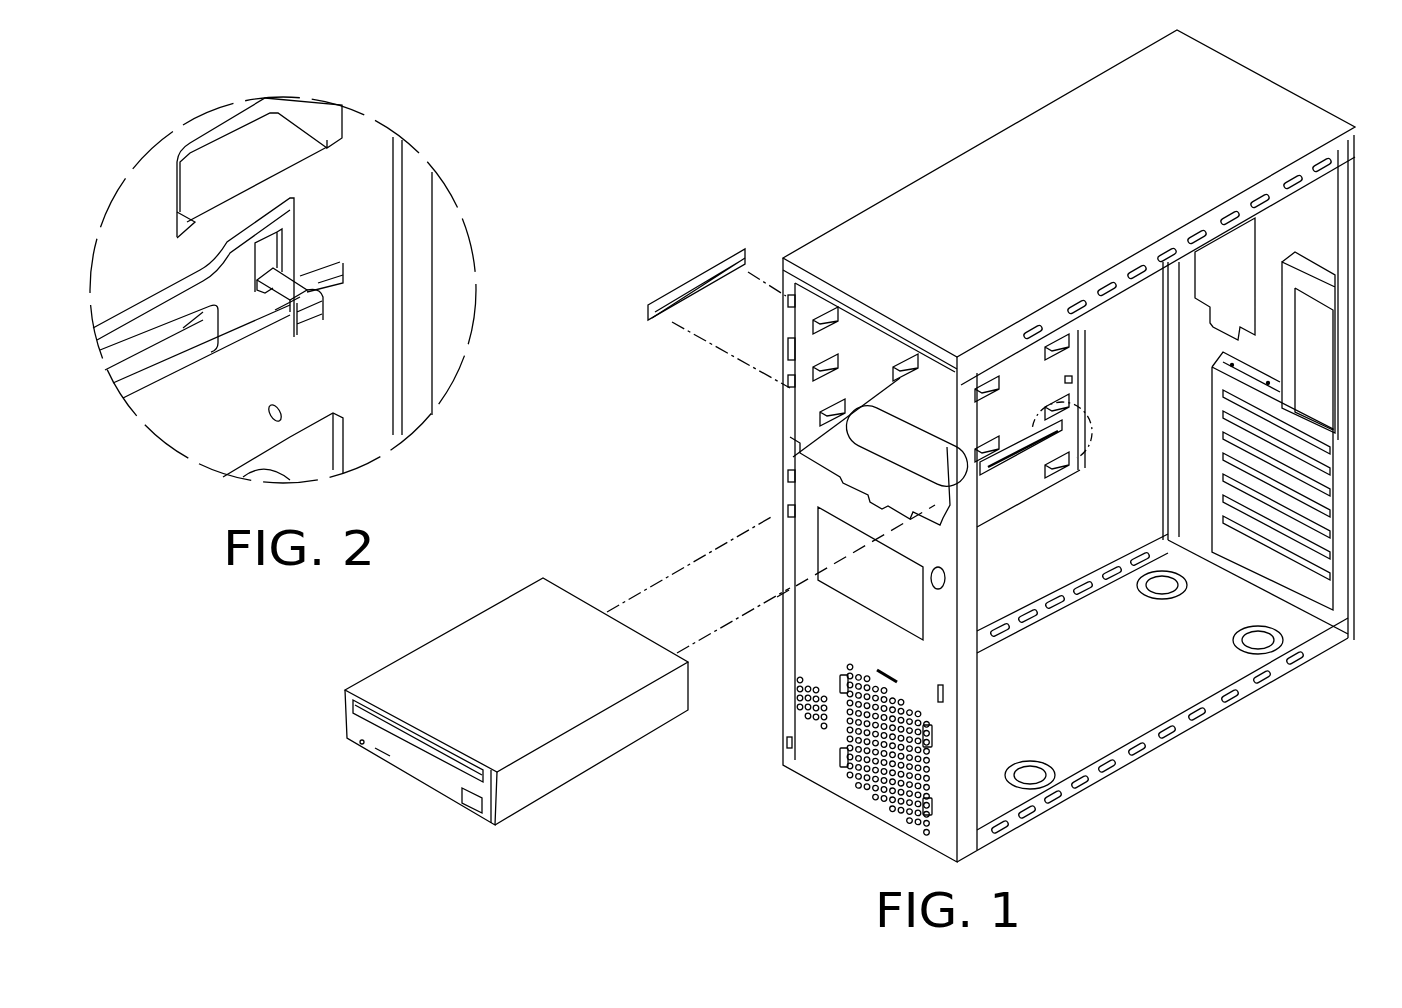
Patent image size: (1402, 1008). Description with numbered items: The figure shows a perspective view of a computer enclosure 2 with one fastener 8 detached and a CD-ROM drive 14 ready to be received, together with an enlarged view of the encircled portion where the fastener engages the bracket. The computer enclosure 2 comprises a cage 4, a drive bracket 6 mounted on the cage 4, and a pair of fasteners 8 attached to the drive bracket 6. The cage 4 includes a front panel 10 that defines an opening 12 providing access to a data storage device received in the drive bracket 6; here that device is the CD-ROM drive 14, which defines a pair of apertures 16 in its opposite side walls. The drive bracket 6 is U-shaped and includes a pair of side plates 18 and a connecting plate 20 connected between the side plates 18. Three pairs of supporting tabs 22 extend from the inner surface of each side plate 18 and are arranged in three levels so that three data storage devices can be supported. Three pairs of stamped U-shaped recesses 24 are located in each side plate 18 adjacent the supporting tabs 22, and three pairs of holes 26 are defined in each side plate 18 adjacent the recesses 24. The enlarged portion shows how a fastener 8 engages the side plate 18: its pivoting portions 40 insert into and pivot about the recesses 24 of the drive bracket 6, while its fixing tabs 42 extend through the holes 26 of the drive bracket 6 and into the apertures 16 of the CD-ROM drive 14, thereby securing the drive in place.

In FIG. 1, the computer enclosure 2 is at (1024, 446).
In FIG. 1, the cage 4 is at (1310, 228).
In FIG. 2, the drive bracket 6 is at (377, 253).
In FIG. 1, the drive bracket 6 is at (1027, 383).
In FIG. 2, the fastener 8 is at (168, 395).
In FIG. 1, the fastener 8 is at (693, 287).
In FIG. 1, the front panel 10 is at (930, 677).
In FIG. 1, the opening 12 is at (853, 333).
In FIG. 1, the CD-ROM drive 14 is at (530, 617).
In FIG. 1, the apertures 16 is at (625, 725).
In FIG. 2, the side plates 18 is at (363, 397).
In FIG. 1, the side plates 18 is at (800, 425).
In FIG. 1, the connecting plate 20 is at (927, 403).
In FIG. 1, the supporting tabs 22 is at (903, 345).
In FIG. 2, the U-shaped recesses 24 is at (320, 298).
In FIG. 1, the U-shaped recesses 24 is at (792, 355).
In FIG. 2, the holes 26 is at (280, 417).
In FIG. 1, the holes 26 is at (893, 373).
In FIG. 2, the pivoting portions 40 is at (320, 318).
In FIG. 2, the fixing tabs 42 is at (297, 277).